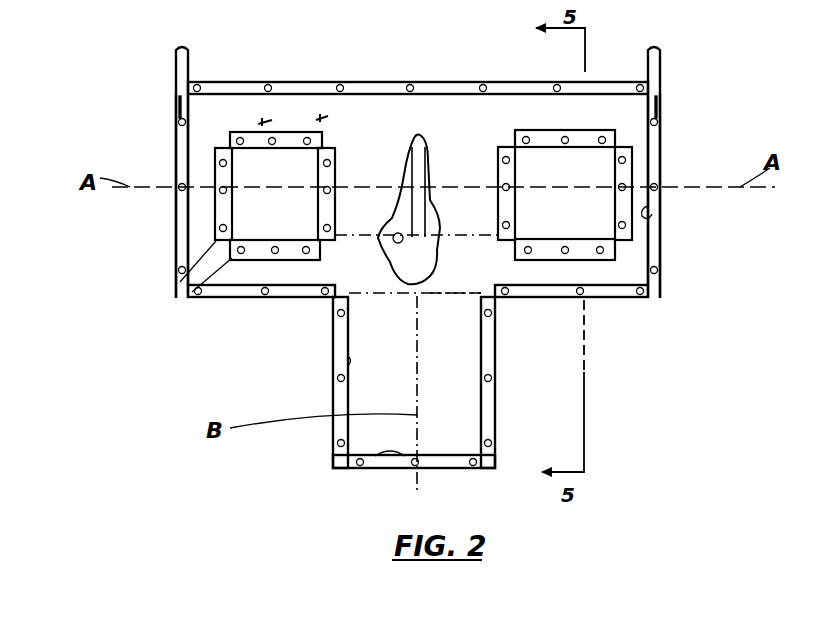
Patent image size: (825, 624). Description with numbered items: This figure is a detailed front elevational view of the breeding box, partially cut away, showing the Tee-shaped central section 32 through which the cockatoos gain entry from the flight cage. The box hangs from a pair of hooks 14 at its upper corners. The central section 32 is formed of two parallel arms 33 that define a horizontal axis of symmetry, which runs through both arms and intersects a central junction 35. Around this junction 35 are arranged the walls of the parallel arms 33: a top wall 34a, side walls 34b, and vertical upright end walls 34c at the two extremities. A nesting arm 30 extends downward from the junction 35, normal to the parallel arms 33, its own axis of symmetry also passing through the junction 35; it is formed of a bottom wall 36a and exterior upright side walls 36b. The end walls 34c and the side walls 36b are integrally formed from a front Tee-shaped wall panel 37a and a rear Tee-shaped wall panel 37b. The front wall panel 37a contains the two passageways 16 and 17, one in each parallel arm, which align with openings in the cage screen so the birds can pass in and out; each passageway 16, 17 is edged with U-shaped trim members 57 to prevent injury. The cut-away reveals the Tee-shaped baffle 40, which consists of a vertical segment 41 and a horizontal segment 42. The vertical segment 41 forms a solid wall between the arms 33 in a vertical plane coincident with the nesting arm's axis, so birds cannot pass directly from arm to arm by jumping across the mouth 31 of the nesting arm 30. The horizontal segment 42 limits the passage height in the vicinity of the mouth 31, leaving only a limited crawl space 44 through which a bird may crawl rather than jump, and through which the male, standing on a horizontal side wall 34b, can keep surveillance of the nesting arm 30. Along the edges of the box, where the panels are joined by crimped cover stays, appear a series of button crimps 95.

The hooks 14 is at (177, 58).
The passageway 16 is at (557, 127).
The passageway 17 is at (213, 200).
The nesting arm 30 is at (497, 411).
The mouth 31 is at (495, 318).
The Tee-shaped central section 32 is at (667, 131).
The parallel arms 33 is at (176, 222).
The top wall 34a is at (378, 90).
The side walls 34b is at (230, 298).
The end walls 34c is at (186, 146).
The central junction 35 is at (427, 187).
The bottom wall 36a is at (359, 467).
The side walls 36b is at (393, 341).
The front Tee-shaped wall panel 37a is at (320, 117).
The rear Tee-shaped wall panel 37b is at (264, 120).
The Tee-shaped baffle 40 is at (420, 138).
The vertical segment 41 is at (412, 212).
The horizontal segment 42 is at (399, 244).
The crawl space 44 is at (490, 262).
The U-shaped trim members 57 is at (200, 272).
The button crimps 95 is at (290, 292).